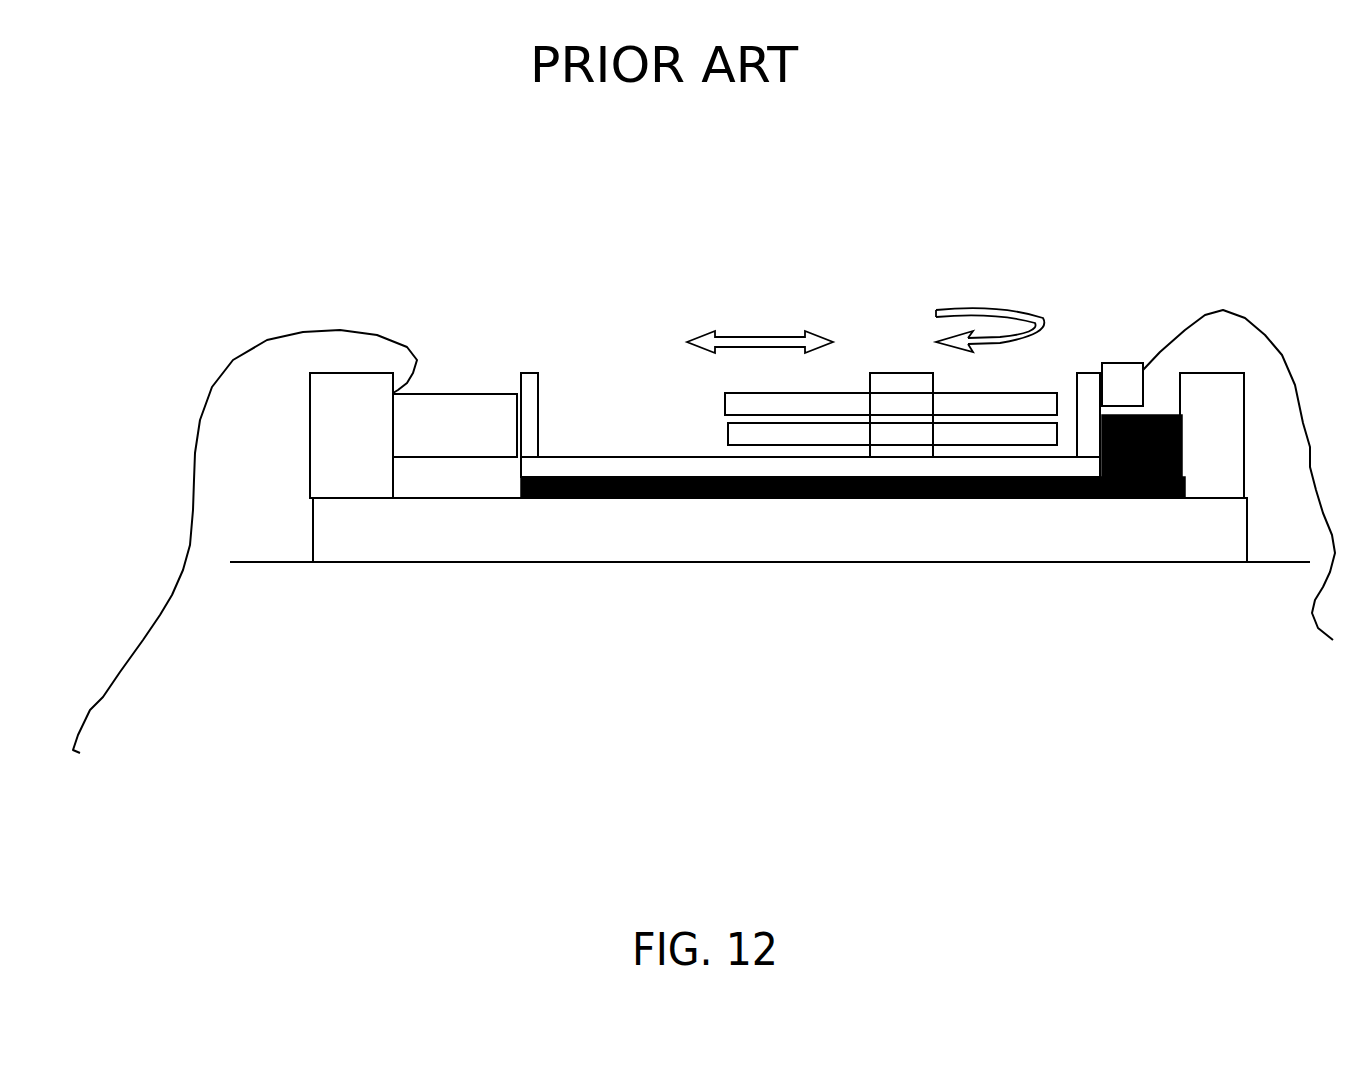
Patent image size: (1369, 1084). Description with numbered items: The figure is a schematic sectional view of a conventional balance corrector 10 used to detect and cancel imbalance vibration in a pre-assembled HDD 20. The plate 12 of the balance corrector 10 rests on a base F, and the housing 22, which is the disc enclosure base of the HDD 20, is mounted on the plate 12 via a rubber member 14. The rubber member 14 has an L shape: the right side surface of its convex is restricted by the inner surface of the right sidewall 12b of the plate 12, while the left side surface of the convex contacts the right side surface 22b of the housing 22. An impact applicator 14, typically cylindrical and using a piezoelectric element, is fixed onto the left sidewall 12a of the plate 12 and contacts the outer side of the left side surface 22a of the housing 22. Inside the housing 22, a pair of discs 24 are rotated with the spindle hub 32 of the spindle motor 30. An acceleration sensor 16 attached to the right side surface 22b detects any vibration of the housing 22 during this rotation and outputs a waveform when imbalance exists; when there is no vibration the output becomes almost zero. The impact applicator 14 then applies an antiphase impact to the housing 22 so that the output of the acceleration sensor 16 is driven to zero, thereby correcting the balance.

The balance corrector 10 is at (774, 240).
The plate 12 is at (543, 547).
The left sidewall 12a is at (324, 436).
The right sidewall 12b is at (1193, 387).
The rubber member 14 is at (467, 407).
The acceleration sensor 16 is at (1123, 373).
The pre-assembled HDD 20 is at (657, 328).
The housing 22 is at (547, 463).
The left side surface 22a is at (530, 378).
The right side surface 22b is at (1090, 380).
The discs 24 is at (745, 404).
The spindle motor 30 is at (897, 353).
The spindle hub 32 is at (883, 417).
The base F is at (783, 665).